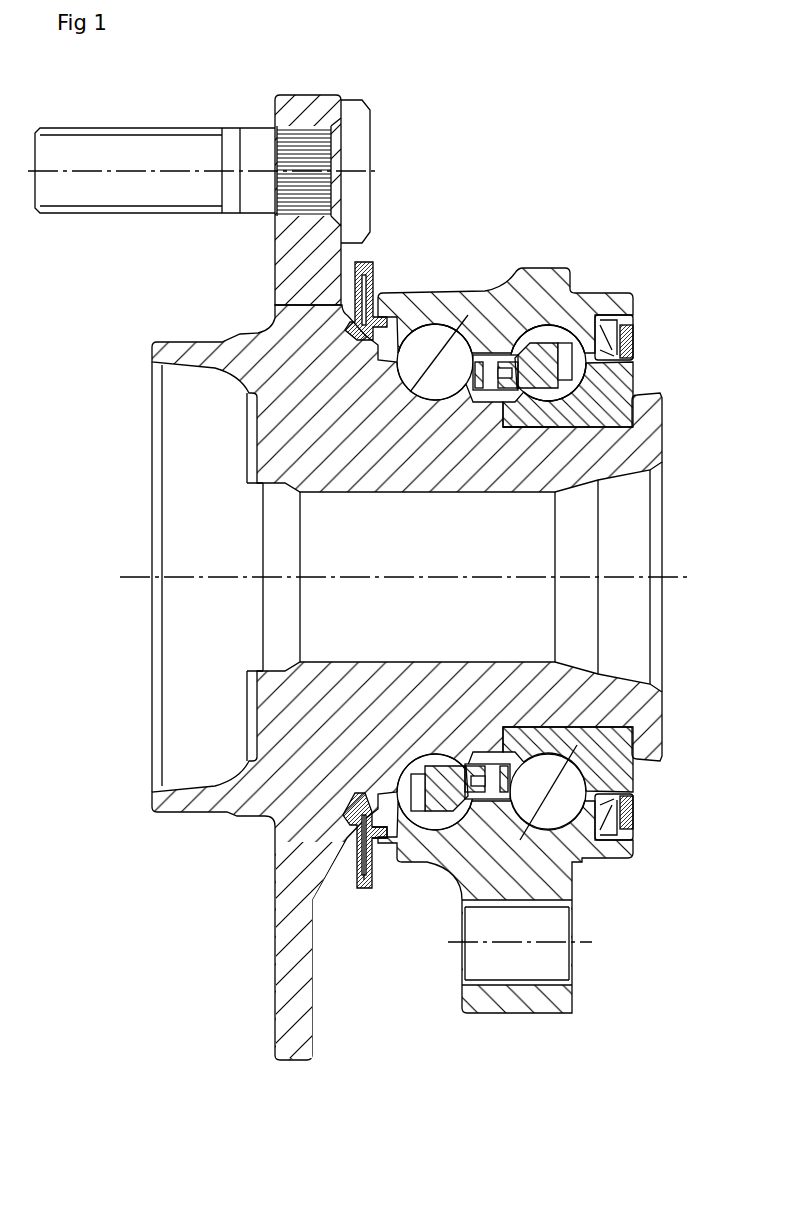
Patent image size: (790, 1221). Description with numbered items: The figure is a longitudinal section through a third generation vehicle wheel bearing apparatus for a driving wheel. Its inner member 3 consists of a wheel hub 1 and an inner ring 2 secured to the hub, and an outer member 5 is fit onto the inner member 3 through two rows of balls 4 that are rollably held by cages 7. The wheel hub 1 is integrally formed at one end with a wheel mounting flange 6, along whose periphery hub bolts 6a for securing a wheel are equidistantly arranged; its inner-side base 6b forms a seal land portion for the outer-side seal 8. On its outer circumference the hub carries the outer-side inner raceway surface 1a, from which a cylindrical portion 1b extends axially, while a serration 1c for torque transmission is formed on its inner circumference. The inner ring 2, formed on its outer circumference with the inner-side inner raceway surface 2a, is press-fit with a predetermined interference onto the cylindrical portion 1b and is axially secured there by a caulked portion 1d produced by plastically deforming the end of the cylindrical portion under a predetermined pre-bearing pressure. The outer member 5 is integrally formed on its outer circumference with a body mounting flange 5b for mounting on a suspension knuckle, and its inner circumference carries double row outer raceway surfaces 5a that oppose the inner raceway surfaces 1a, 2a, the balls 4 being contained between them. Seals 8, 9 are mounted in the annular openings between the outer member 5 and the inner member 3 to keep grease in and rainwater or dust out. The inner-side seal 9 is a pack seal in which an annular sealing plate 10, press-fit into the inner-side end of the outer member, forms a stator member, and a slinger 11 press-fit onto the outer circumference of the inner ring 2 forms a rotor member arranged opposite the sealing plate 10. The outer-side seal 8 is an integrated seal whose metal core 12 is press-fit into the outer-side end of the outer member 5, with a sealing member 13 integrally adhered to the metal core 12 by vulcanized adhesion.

The wheel hub 1 is at (413, 682).
The inner raceway surface 1a is at (432, 375).
The cylindrical portion 1b is at (579, 405).
The serration 1c is at (355, 494).
The caulked portion 1d is at (658, 418).
The inner ring 2 is at (596, 577).
The inner raceway surface 2a is at (526, 393).
The inner member 3 is at (236, 428).
The rolling elements 4 is at (462, 833).
The outer member 5 is at (505, 653).
The outer raceway surfaces 5a is at (545, 355).
The body mounting flange 5b is at (520, 1010).
The wheel mounting flange 6 is at (204, 173).
The hub bolts 6a is at (198, 152).
The inner-side base 6b is at (350, 307).
The cages 7 is at (508, 755).
The outer-side seal 8 is at (282, 840).
The inner-side seal 9 is at (657, 832).
The sealing plate 10 is at (625, 845).
The slinger 11 is at (633, 818).
The metal core 12 is at (358, 838).
The sealing member 13 is at (352, 812).